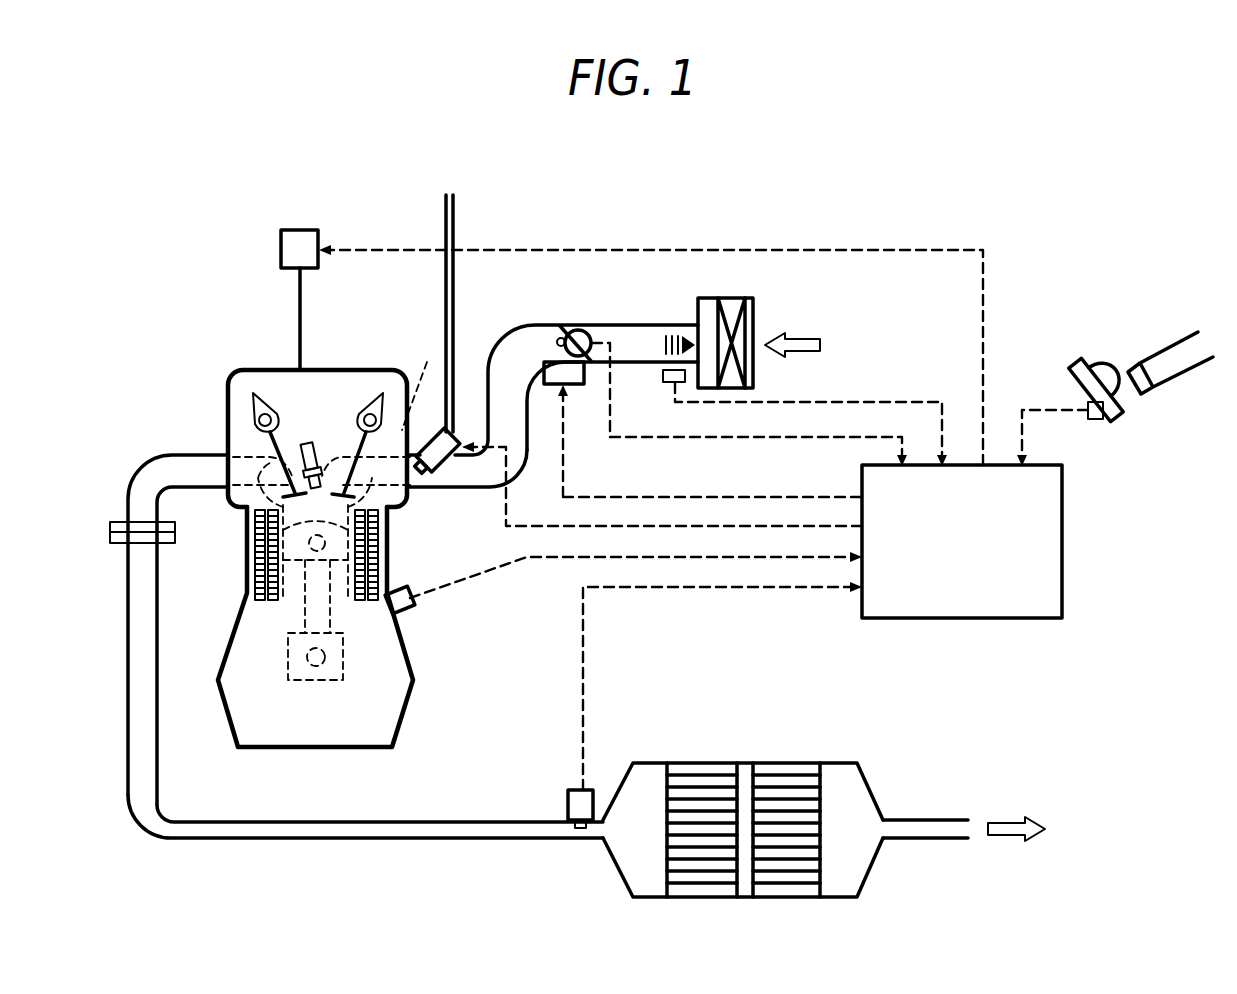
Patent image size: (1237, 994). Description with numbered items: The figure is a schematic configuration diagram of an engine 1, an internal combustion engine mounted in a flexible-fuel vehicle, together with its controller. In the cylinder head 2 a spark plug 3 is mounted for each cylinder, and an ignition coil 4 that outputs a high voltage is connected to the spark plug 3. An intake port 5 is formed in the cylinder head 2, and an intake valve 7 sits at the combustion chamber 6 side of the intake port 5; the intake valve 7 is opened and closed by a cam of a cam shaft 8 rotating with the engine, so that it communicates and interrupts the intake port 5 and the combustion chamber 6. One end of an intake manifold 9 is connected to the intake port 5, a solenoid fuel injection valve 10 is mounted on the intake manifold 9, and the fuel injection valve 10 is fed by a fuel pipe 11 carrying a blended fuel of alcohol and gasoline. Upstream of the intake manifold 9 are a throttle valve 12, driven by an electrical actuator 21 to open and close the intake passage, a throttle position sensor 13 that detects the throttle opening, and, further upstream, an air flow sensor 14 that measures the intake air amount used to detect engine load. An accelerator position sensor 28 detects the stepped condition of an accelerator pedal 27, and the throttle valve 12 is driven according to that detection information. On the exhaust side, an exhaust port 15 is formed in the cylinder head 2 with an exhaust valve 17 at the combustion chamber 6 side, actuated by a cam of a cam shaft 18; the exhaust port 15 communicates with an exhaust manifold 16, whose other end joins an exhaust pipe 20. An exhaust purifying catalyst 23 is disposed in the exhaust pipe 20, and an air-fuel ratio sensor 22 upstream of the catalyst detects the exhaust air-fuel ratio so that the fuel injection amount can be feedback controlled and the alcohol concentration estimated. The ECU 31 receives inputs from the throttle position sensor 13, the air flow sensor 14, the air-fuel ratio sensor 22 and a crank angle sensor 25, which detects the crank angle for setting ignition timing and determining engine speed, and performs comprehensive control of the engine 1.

The engine 1 is at (235, 362).
The cylinder head 2 is at (256, 372).
The spark plug 3 is at (311, 443).
The ignition coil 4 is at (300, 230).
The intake port 5 is at (434, 401).
The combustion chamber 6 is at (287, 533).
The intake valve 7 is at (352, 440).
The cam shaft 8 is at (372, 395).
The intake manifold 9 is at (458, 487).
The fuel injection valve 10 is at (460, 440).
The fuel pipe 11 is at (455, 218).
The throttle valve 12 is at (566, 336).
The throttle position sensor 13 is at (584, 338).
The air flow sensor 14 is at (672, 384).
The exhaust port 15 is at (258, 492).
The exhaust manifold 16 is at (138, 470).
The exhaust valve 17 is at (268, 440).
The cam shaft 18 is at (255, 407).
The exhaust pipe 20 is at (273, 840).
The electrical actuator 21 is at (548, 386).
The air-fuel ratio sensor 22 is at (572, 790).
The exhaust purifying catalyst 23 is at (747, 757).
The crank angle sensor 25 is at (412, 605).
The accelerator pedal 27 is at (1082, 367).
The accelerator position sensor 28 is at (1100, 422).
The ECU 31 is at (1063, 483).